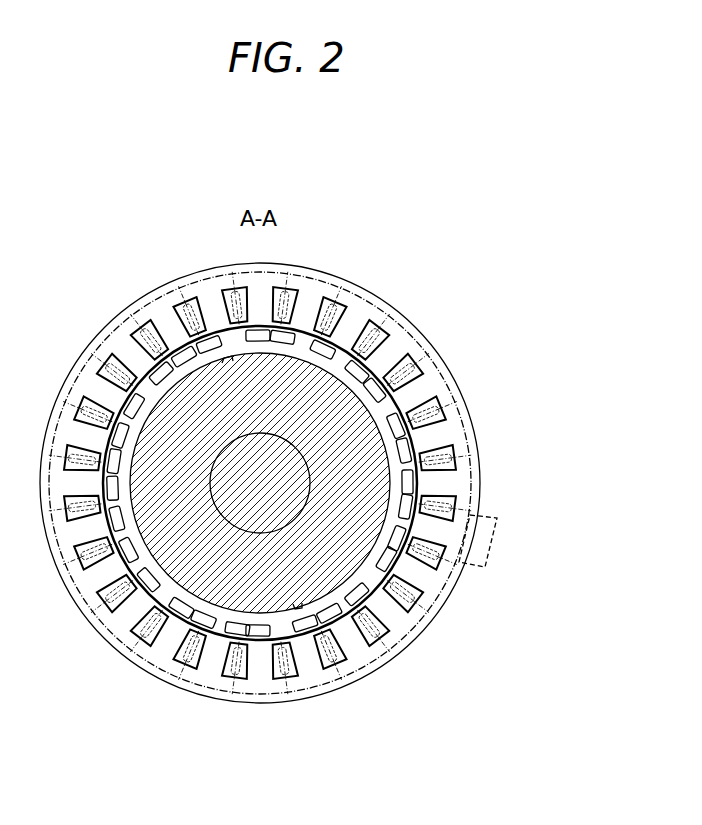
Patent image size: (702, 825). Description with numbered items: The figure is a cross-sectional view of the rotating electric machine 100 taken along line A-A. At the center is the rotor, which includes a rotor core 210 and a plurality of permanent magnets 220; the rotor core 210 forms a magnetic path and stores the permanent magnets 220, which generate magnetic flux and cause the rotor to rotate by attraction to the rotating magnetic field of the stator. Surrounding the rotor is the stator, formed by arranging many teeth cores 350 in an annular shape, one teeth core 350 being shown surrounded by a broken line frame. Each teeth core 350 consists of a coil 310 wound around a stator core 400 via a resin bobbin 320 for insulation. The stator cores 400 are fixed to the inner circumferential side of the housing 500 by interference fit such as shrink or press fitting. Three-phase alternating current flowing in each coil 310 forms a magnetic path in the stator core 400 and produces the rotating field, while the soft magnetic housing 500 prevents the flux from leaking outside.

The rotating electric machine 100 is at (56, 193).
The rotor core 210 is at (347, 375).
The permanent magnets 220 is at (398, 421).
The coil 310 is at (460, 513).
The resin bobbin 320 is at (478, 512).
The stator core 400 is at (452, 538).
The teeth core 350 is at (477, 553).
The housing 500 is at (370, 683).